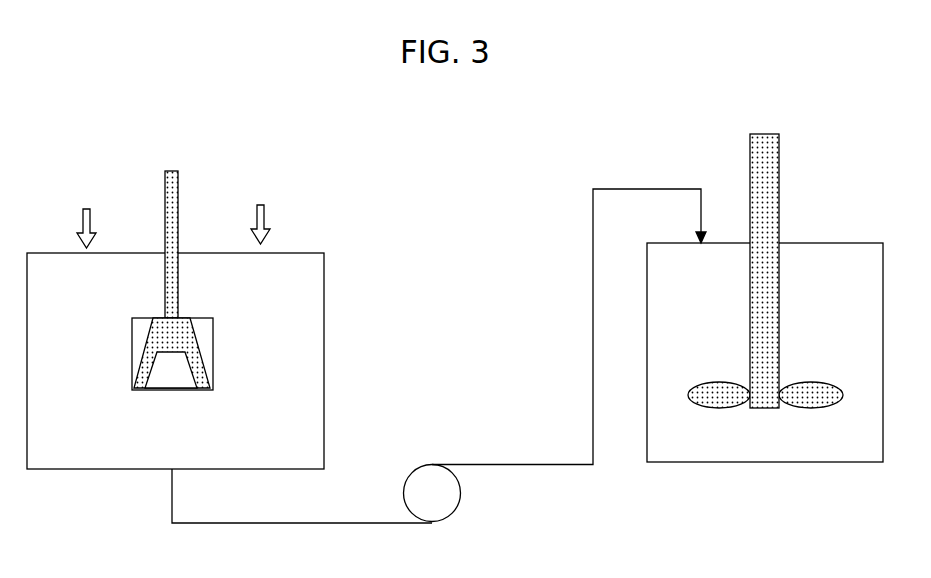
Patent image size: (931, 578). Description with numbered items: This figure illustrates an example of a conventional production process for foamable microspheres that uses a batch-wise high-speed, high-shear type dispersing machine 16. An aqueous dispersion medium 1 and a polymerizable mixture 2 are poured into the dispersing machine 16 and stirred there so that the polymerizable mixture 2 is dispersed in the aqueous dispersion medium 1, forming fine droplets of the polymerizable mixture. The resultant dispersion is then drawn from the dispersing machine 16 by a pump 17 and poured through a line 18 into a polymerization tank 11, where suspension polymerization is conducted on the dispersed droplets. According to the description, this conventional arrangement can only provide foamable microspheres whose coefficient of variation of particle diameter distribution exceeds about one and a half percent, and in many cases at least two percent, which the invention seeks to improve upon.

The aqueous dispersion medium 1 is at (86, 212).
The polymerizable mixture 2 is at (260, 208).
The polymerization tank 11 is at (757, 462).
The batch-wise high-speed, high-shear type dispersing machine 16 is at (324, 347).
The pump 17 is at (460, 493).
The line 18 is at (593, 311).